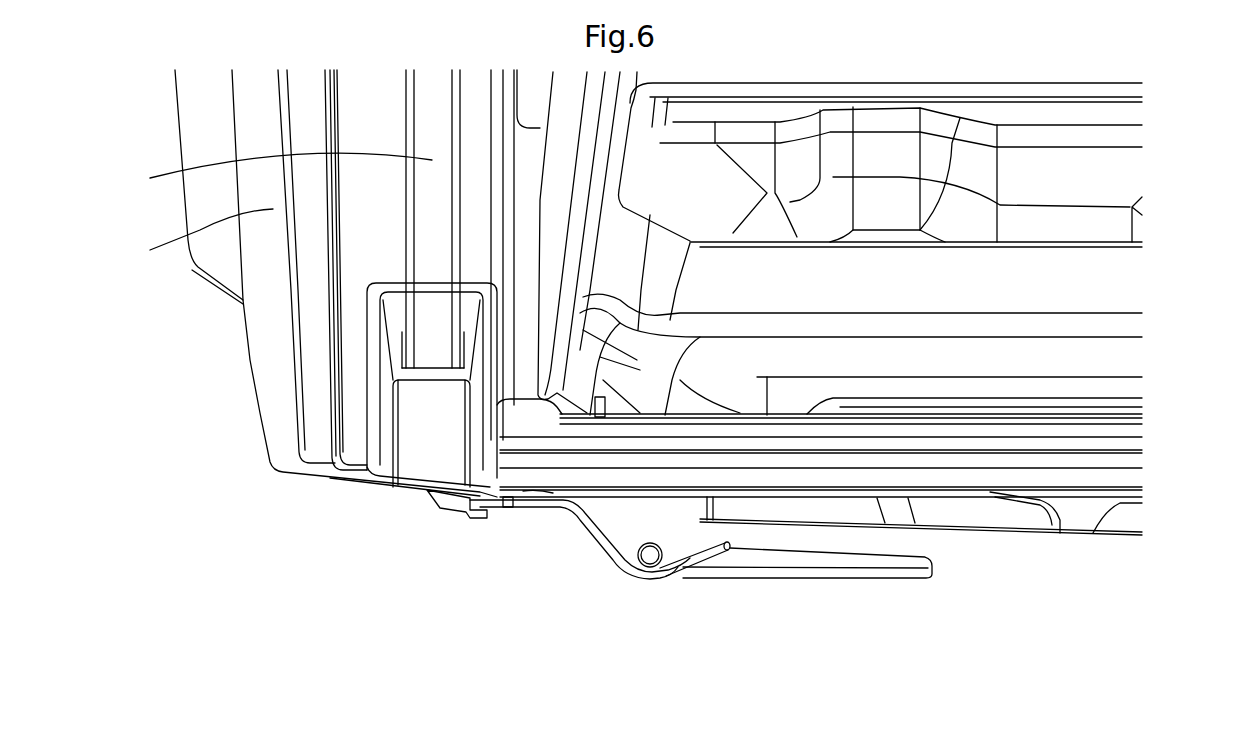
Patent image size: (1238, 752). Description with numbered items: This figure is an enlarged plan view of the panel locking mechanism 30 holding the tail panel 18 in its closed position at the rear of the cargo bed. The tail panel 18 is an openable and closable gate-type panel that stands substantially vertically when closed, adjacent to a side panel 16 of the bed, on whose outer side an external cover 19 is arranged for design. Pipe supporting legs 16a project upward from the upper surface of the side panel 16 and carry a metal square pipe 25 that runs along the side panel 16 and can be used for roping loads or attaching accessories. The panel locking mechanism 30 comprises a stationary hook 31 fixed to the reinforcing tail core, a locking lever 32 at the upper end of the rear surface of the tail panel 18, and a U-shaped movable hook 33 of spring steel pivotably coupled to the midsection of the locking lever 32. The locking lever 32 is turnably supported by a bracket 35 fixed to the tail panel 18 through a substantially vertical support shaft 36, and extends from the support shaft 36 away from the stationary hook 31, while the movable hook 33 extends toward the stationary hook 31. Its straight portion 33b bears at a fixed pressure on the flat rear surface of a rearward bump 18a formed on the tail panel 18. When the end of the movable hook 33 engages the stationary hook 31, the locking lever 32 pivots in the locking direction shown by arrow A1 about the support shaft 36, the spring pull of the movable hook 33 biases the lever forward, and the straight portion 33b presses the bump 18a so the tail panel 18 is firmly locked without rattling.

The side panel 16 is at (373, 227).
The pipe supporting leg 16a is at (380, 423).
The tail panel 18 is at (1035, 452).
The bump 18a is at (503, 447).
The external cover 19 is at (273, 209).
The square pipe 25 is at (432, 160).
The panel locking mechanism 30 is at (670, 608).
The stationary hook 31 is at (463, 502).
The locking lever 32 is at (872, 563).
The movable hook 33 is at (627, 567).
The straight portion 33b is at (512, 507).
The bracket 35 is at (690, 417).
The support shaft 36 is at (670, 577).
The locking direction arrow A1 is at (757, 677).